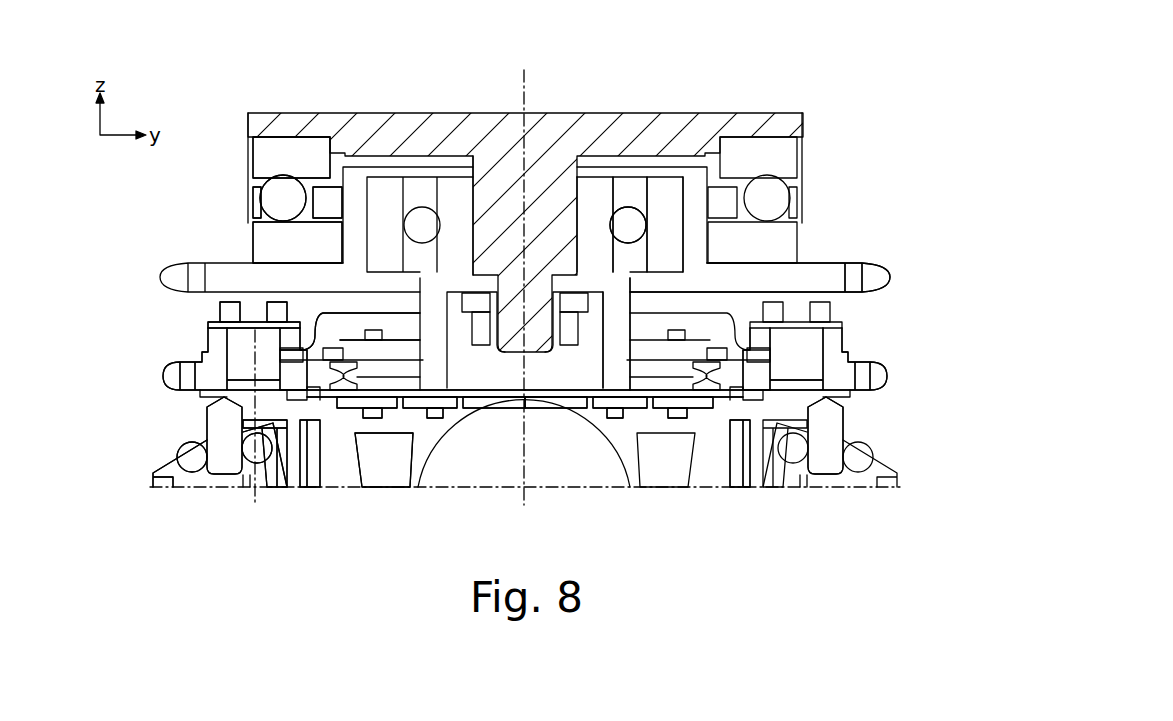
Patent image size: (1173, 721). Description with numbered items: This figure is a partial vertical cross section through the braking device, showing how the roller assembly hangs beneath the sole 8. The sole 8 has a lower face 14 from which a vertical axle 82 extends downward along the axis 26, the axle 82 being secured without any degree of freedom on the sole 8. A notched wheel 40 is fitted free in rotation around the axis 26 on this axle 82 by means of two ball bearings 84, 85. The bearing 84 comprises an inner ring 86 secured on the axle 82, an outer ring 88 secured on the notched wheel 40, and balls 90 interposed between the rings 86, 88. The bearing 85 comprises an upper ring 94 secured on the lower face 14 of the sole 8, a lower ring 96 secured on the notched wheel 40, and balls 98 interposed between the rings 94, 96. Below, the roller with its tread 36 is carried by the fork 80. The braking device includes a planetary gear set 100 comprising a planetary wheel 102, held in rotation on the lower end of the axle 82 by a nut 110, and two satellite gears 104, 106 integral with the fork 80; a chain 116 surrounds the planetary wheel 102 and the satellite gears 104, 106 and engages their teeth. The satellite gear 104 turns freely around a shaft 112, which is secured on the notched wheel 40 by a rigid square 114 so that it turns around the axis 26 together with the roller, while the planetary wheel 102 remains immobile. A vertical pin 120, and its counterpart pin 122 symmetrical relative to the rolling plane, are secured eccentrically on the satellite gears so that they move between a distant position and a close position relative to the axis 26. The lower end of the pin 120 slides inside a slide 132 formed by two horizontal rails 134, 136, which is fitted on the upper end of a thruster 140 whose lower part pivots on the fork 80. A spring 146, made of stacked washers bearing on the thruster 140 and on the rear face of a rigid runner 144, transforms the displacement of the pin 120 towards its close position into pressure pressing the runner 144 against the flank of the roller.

The sole 8 is at (541, 194).
The lower face 14 is at (702, 157).
The axis 26 is at (537, 85).
The tread 36 is at (563, 470).
The notched wheel 40 is at (827, 270).
The fork 80 is at (310, 470).
The vertical axle 82 is at (520, 220).
The ball bearing 84 is at (652, 140).
The ball bearing 85 is at (236, 185).
The inner ring 86 is at (593, 190).
The outer ring 88 is at (668, 190).
The balls 90 is at (623, 213).
The upper ring 94 is at (262, 168).
The lower ring 96 is at (259, 224).
The balls 98 is at (265, 198).
The planetary gear set 100 is at (879, 359).
The planetary wheel 102 is at (617, 377).
The satellite gear 104 is at (177, 375).
The satellite gear 106 is at (875, 376).
The nut 110 is at (567, 330).
The shaft 112 is at (253, 523).
The rigid square 114 is at (315, 305).
The chain 116 is at (350, 403).
The vertical pin 120 is at (220, 418).
The pin 122 is at (830, 423).
The slide 132 is at (189, 499).
The rail 134 is at (182, 470).
The rail 136 is at (257, 452).
The thruster 140 is at (187, 460).
The rigid runner 144 is at (393, 477).
The spring 146 is at (273, 490).